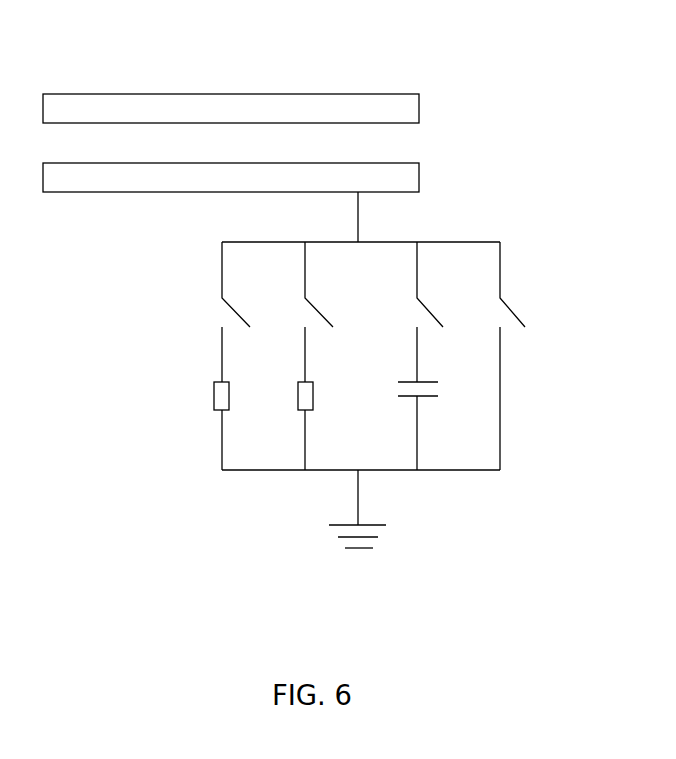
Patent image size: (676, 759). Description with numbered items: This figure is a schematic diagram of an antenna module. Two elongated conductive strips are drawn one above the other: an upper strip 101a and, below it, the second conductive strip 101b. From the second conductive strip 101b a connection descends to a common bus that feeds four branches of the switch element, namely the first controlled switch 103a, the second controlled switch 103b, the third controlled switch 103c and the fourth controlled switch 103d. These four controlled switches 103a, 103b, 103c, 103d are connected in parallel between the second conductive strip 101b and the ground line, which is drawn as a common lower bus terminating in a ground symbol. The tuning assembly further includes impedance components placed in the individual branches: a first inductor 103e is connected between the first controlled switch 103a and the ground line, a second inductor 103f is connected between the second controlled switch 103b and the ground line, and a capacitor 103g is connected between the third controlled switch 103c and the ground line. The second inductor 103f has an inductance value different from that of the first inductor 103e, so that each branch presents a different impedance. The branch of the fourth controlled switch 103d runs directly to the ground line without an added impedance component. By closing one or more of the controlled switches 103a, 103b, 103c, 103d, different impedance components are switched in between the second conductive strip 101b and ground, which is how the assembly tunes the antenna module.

The first electrode 101a is at (156, 94).
The second conductive strip 101b is at (162, 192).
The first controlled switch 103a is at (242, 317).
The second controlled switch 103b is at (323, 312).
The third controlled switch 103c is at (435, 315).
The fourth controlled switch 103d is at (517, 313).
The first inductor 103e is at (214, 397).
The second inductor 103f is at (298, 397).
The capacitor 103g is at (432, 397).